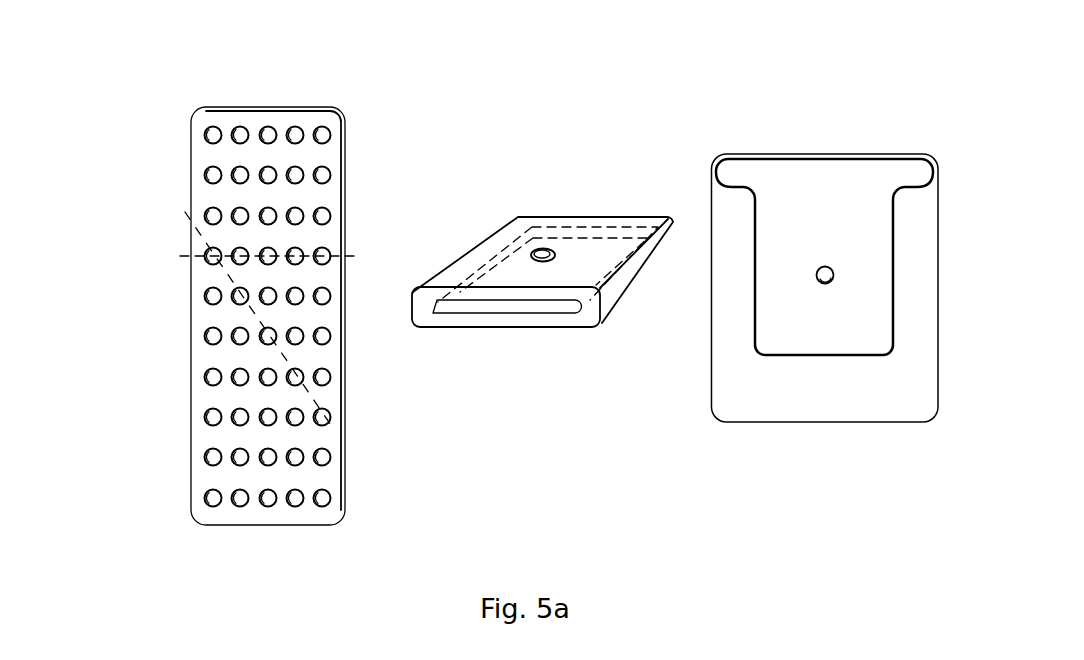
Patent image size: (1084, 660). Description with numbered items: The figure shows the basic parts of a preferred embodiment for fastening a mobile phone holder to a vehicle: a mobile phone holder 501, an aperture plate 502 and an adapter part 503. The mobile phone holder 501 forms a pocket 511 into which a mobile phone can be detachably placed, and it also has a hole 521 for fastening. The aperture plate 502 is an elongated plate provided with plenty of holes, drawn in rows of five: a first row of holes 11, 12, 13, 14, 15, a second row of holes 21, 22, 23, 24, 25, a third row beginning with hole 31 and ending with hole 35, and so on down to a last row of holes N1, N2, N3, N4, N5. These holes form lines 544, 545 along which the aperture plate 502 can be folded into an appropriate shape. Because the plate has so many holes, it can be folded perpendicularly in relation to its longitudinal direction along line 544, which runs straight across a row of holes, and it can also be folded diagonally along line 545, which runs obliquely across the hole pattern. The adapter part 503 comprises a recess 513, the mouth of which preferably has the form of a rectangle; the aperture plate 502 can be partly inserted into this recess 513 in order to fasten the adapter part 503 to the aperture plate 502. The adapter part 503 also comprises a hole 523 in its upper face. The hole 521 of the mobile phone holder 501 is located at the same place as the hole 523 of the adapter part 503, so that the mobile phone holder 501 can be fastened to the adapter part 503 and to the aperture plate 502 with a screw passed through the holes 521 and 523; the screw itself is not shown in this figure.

The hole 11 is at (210, 128).
The hole 12 is at (239, 128).
The hole 13 is at (269, 128).
The hole 14 is at (299, 128).
The hole 15 is at (324, 128).
The hole 21 is at (236, 171).
The hole 22 is at (208, 168).
The hole 23 is at (272, 170).
The hole 24 is at (299, 171).
The hole 25 is at (331, 174).
The hole 31 is at (210, 210).
The hole 35 is at (331, 213).
The hole N1 is at (212, 504).
The hole N2 is at (239, 504).
The hole N3 is at (268, 504).
The hole N4 is at (297, 504).
The hole N5 is at (324, 504).
The line 544 is at (267, 256).
The line 545 is at (265, 331).
The aperture plate 502 is at (205, 397).
The adapter part 503 is at (608, 300).
The recess 513 is at (500, 307).
The hole 523 is at (543, 240).
The mobile phone holder 501 is at (918, 403).
The pocket 511 is at (788, 322).
The hole 521 is at (828, 267).